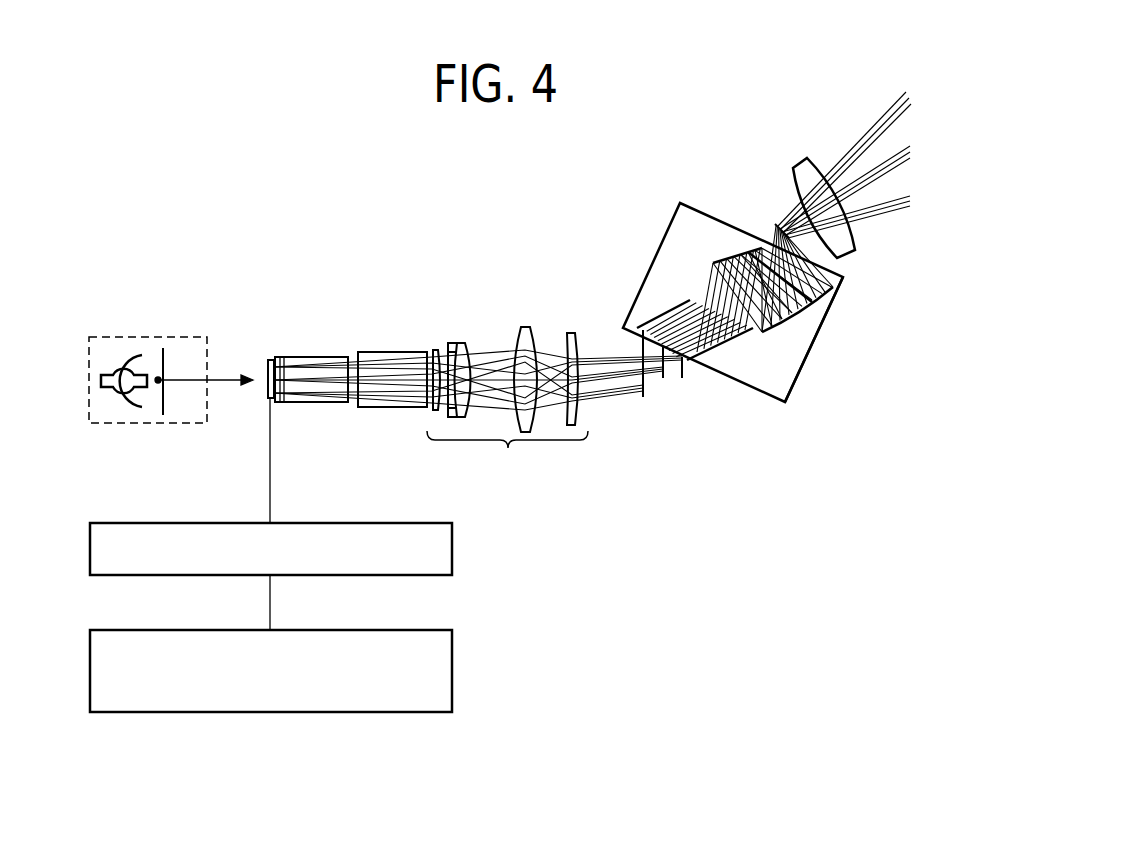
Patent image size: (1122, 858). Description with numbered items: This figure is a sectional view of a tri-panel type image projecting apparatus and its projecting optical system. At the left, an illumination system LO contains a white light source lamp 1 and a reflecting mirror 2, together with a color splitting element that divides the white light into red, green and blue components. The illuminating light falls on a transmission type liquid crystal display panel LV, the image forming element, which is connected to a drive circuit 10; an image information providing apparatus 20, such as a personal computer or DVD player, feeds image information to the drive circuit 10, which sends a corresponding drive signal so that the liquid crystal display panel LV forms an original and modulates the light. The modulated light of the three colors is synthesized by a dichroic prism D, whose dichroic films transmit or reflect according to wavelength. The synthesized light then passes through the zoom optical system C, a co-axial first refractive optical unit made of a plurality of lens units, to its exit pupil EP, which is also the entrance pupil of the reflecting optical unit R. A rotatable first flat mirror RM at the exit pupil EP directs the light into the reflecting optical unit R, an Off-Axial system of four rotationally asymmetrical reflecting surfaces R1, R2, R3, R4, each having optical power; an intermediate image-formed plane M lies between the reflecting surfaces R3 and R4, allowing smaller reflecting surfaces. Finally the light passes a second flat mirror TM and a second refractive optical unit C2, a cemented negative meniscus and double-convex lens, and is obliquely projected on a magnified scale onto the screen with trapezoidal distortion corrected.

The illumination system LO is at (116, 336).
The white light source lamp 1 is at (113, 388).
The reflecting mirror 2 is at (124, 403).
The transmission type liquid crystal display panel LV is at (268, 368).
The dichroic prism D is at (373, 352).
The zoom optical system C is at (507, 405).
The exit pupil EP is at (665, 378).
The reflecting optical unit R is at (659, 250).
The reflecting surface R1 is at (647, 313).
The reflecting surface R2 is at (740, 347).
The reflecting surface R3 is at (741, 256).
The reflecting surface R4 is at (812, 325).
The first flat mirror RM is at (675, 371).
The intermediate image-formed plane M is at (712, 275).
The second flat mirror TM is at (779, 229).
The second refractive optical unit C2 is at (848, 260).
The drive circuit 10 is at (453, 549).
The image information providing apparatus 20 is at (453, 670).